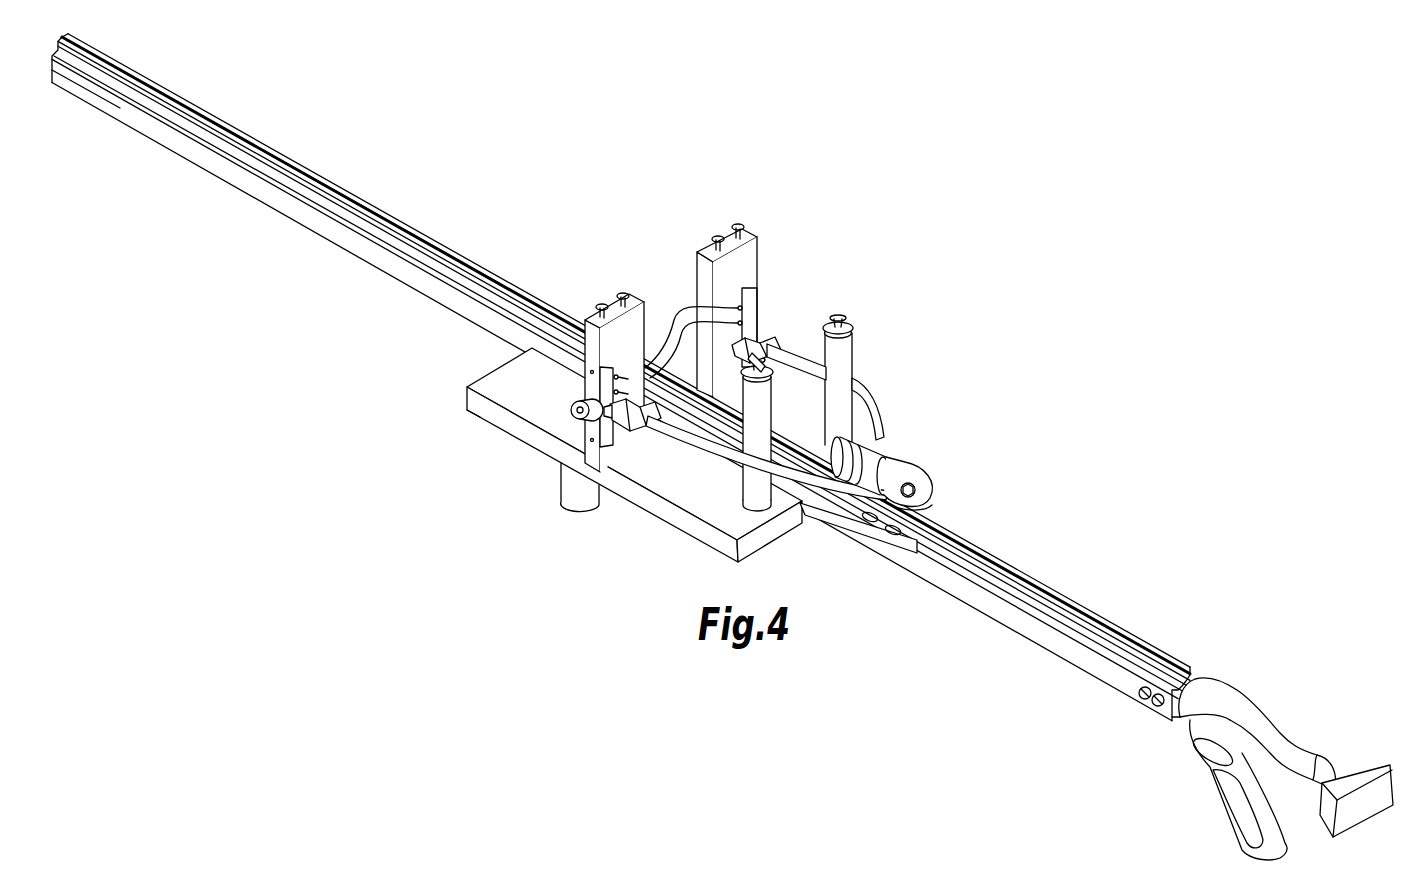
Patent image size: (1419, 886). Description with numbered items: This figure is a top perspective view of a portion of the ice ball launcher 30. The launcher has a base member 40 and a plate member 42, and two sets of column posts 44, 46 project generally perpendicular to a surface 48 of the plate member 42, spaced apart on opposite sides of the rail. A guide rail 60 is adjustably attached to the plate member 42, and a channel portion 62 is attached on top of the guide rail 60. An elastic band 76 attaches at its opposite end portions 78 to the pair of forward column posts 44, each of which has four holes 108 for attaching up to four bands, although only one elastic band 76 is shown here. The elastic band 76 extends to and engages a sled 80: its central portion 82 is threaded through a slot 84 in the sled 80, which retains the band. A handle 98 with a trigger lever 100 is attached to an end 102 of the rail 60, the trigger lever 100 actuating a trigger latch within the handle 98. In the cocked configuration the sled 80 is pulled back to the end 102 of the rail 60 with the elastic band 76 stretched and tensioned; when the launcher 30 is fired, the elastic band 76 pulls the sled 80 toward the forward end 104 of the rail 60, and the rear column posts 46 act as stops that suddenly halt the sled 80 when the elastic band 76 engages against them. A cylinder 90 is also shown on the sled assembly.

The ice ball launcher 30 is at (880, 258).
The base member 40 is at (515, 456).
The plate member 42 is at (663, 510).
The forward column posts 44 is at (635, 298).
The rear column posts 46 is at (772, 410).
The surface of the plate member 48 is at (750, 520).
The guide rail 60 is at (383, 258).
The channel portion 62 is at (435, 235).
The elastic band 76 is at (862, 408).
The end portions of the elastic band 78 is at (776, 344).
The sled 80 is at (920, 478).
The central portion of the elastic band 82 is at (834, 500).
The slot 84 is at (930, 525).
The cylinder 90 is at (862, 447).
The handle 98 is at (1260, 690).
The trigger lever 100 is at (1207, 757).
The end of the rail 102 is at (1188, 645).
The forward end of the rail 104 is at (75, 100).
The holes 108 is at (670, 312).